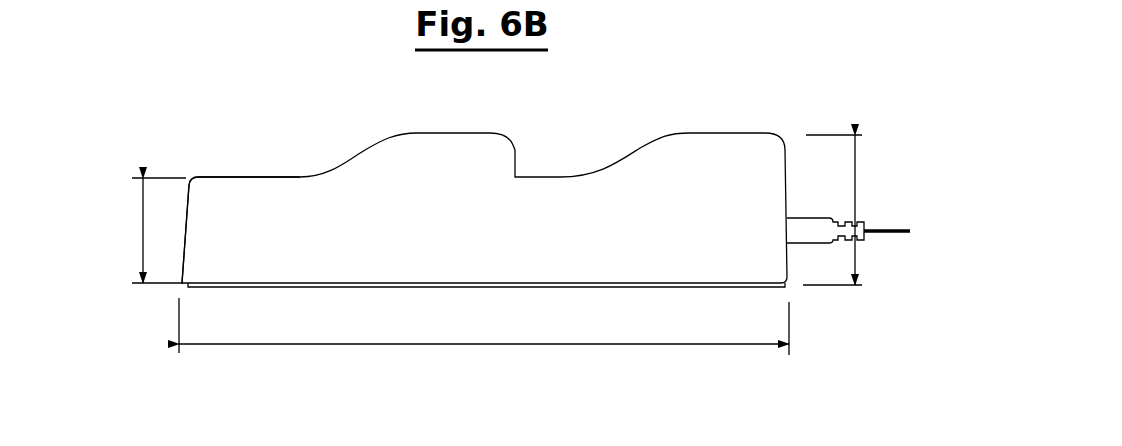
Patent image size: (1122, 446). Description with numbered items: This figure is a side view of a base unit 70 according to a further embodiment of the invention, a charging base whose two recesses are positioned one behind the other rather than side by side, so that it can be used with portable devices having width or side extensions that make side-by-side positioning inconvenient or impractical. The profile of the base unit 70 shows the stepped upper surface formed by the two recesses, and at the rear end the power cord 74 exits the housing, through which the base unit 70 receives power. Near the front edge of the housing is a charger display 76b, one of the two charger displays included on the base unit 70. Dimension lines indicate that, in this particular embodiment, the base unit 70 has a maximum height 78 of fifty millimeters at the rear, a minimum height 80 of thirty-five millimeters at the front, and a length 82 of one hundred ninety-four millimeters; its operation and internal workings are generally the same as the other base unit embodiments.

The base unit 70 is at (693, 160).
The power cord 74 is at (865, 220).
The charger display 76b is at (182, 210).
The maximum height 78 is at (857, 163).
The minimum height 80 is at (138, 209).
The length 82 is at (565, 345).